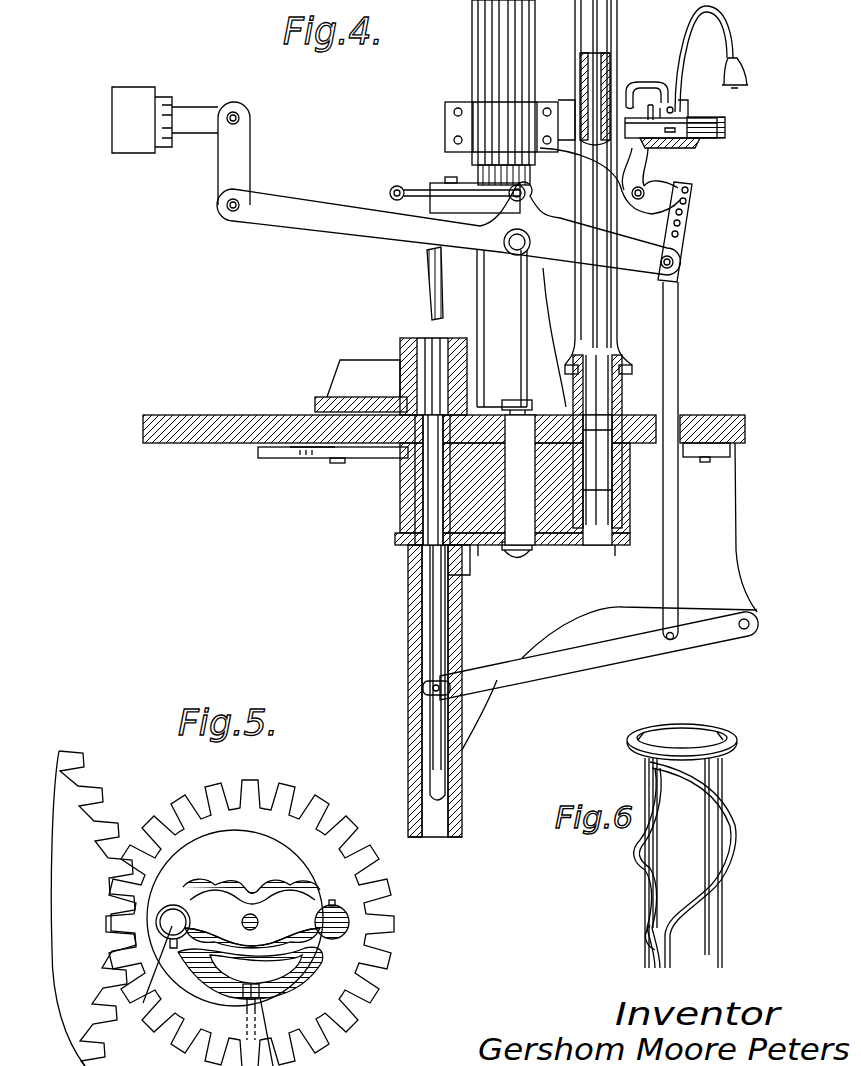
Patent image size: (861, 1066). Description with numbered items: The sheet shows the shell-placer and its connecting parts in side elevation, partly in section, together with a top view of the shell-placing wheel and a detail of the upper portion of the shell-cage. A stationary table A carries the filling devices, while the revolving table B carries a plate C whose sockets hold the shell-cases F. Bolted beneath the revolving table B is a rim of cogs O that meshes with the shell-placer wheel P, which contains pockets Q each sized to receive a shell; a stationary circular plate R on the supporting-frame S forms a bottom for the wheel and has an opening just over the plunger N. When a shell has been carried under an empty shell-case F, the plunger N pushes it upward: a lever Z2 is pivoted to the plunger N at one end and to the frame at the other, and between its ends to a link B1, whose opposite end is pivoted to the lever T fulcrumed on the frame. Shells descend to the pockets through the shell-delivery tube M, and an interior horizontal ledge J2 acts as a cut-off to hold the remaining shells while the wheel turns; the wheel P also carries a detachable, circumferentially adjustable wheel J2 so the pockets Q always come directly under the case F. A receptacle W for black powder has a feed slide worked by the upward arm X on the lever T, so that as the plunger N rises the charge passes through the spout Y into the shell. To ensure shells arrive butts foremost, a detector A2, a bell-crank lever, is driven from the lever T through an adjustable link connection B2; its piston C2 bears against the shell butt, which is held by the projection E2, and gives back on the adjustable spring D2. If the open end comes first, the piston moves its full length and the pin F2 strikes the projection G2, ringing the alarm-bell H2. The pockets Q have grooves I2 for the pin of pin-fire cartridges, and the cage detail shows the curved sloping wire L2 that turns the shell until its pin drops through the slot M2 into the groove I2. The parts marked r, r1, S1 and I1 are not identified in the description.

In FIG. 4, the receptacle W is at (487, 36).
In FIG. 4, the projection E2 is at (570, 112).
In FIG. 4, the shell-delivery tube M is at (600, 308).
In FIG. 4, the projection G2 is at (645, 84).
In FIG. 4, the pin F2 is at (653, 108).
In FIG. 4, the alarm-bell H2 is at (728, 78).
In FIG. 4, the adjustable spring D2 is at (700, 120).
In FIG. 4, the piston C2 is at (624, 185).
In FIG. 4, the detector A2 is at (678, 180).
In FIG. 4, the adjustable link connection B2 is at (682, 232).
In FIG. 4, the handle r is at (165, 120).
In FIG. 4, the lever T is at (449, 188).
In FIG. 4, the upward arm X is at (522, 208).
In FIG. 4, the spout Y is at (425, 278).
In FIG. 4, the housing r1 is at (521, 328).
In FIG. 4, the bolt S1 is at (517, 400).
In FIG. 4, the revolving table B is at (250, 408).
In FIG. 4, the stationary table A is at (712, 416).
In FIG. 4, the link B1 is at (678, 330).
In FIG. 4, the shell-case F is at (400, 352).
In FIG. 4, the plate C is at (325, 400).
In FIG. 4, the rim of cogs O is at (365, 458).
In FIG. 5, the rim of cogs O is at (93, 908).
In FIG. 4, the shell-placer wheel P is at (402, 490).
In FIG. 5, the shell-placer wheel P is at (250, 784).
In FIG. 4, the pockets Q is at (430, 505).
In FIG. 5, the pockets Q is at (182, 917).
In FIG. 4, the circular plate R is at (476, 548).
In FIG. 5, the circular plate R is at (258, 892).
In FIG. 4, the supporting-frame S is at (609, 596).
In FIG. 4, the plunger N is at (432, 655).
In FIG. 5, the plunger N is at (178, 928).
In FIG. 4, the lever Z2 is at (543, 672).
In FIG. 5, the interior horizontal ledge J2 is at (322, 847).
In FIG. 5, the pin I1 is at (330, 900).
In FIG. 5, the grooves I2 is at (150, 978).
In FIG. 6, the curved sloping wire L2 is at (728, 838).
In FIG. 6, the slot M2 is at (665, 942).